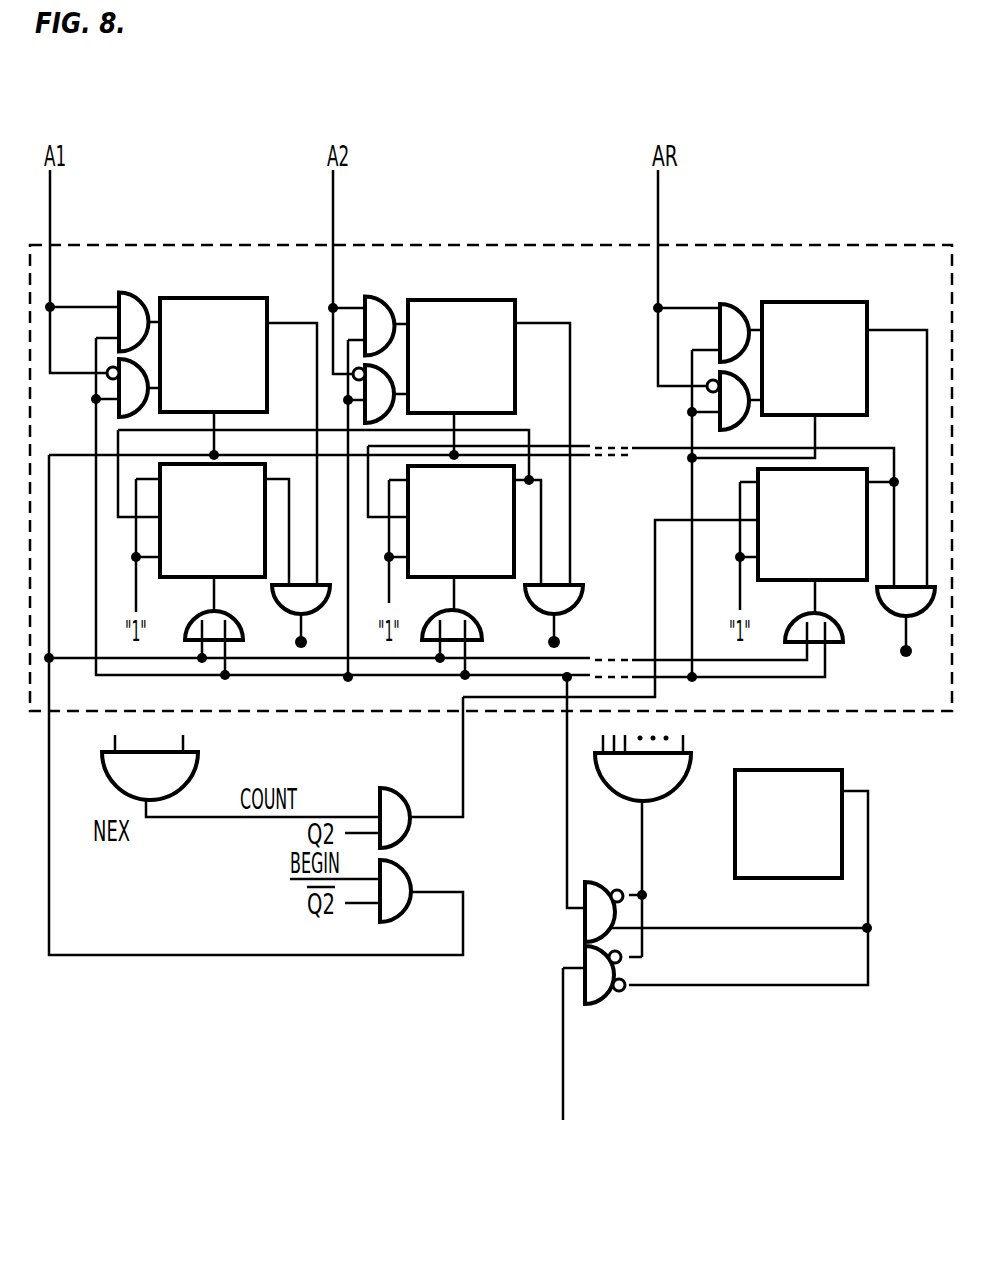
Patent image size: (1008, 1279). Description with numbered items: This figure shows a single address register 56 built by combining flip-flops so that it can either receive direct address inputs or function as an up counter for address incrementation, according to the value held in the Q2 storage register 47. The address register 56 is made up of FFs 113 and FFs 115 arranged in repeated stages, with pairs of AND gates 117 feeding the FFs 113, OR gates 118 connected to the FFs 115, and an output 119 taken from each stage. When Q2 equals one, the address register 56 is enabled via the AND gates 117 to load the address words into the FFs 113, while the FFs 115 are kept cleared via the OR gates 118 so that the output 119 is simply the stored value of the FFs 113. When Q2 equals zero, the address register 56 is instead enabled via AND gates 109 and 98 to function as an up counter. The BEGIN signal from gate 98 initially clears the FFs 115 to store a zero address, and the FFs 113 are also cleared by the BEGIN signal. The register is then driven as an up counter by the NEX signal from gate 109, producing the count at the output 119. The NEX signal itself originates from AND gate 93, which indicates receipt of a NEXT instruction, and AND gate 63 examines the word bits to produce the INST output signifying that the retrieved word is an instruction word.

The address register 56 is at (465, 246).
The AND gates 117 is at (140, 339).
The FFs 113 is at (230, 352).
The FFs 115 is at (242, 538).
The OR gates 118 is at (200, 612).
The output 119 is at (297, 642).
The AND gate 93 is at (162, 784).
The AND gate 109 is at (408, 842).
The AND gate 98 is at (406, 920).
The AND gate 63 is at (656, 785).
The Q2 storage register 47 is at (788, 824).